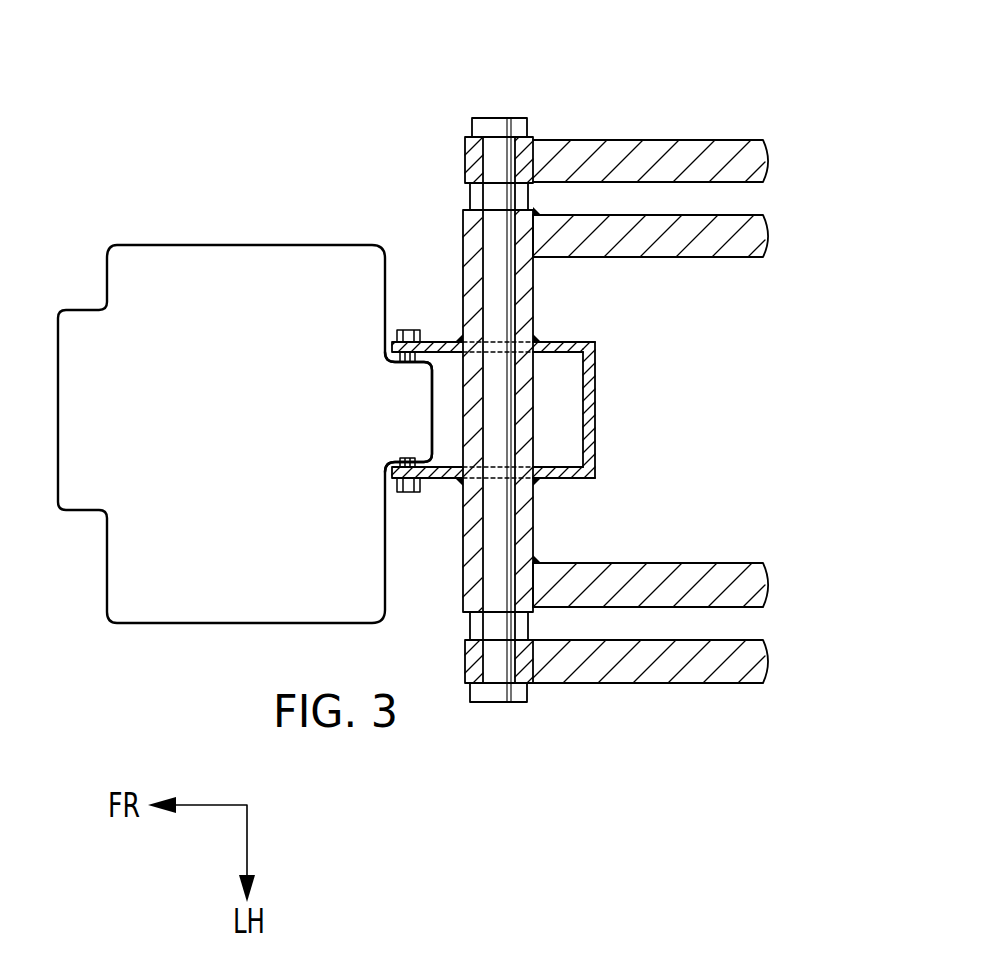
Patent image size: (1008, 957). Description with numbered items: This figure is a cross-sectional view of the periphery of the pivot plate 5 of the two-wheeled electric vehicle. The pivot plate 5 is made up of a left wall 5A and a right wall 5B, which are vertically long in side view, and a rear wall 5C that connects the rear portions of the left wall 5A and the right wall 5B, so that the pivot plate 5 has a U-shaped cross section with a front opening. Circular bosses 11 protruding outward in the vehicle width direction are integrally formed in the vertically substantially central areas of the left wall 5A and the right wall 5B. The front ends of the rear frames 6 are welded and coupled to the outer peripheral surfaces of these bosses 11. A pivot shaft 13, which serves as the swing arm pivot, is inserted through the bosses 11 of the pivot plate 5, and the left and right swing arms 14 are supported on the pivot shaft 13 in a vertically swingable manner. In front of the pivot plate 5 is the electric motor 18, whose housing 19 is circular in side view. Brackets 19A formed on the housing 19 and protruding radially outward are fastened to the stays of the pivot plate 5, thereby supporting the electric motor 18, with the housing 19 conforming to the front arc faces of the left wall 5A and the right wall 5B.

The pivot plate 5 is at (556, 411).
The left wall 5A is at (437, 492).
The right wall 5B is at (453, 340).
The rear wall 5C is at (597, 430).
The rear frame 6 is at (722, 222).
The boss 11 is at (472, 243).
The pivot shaft 13 is at (495, 170).
The swing arm 14 is at (647, 145).
The electric motor 18 is at (230, 414).
The housing 19 is at (218, 260).
The bracket 19A is at (405, 403).